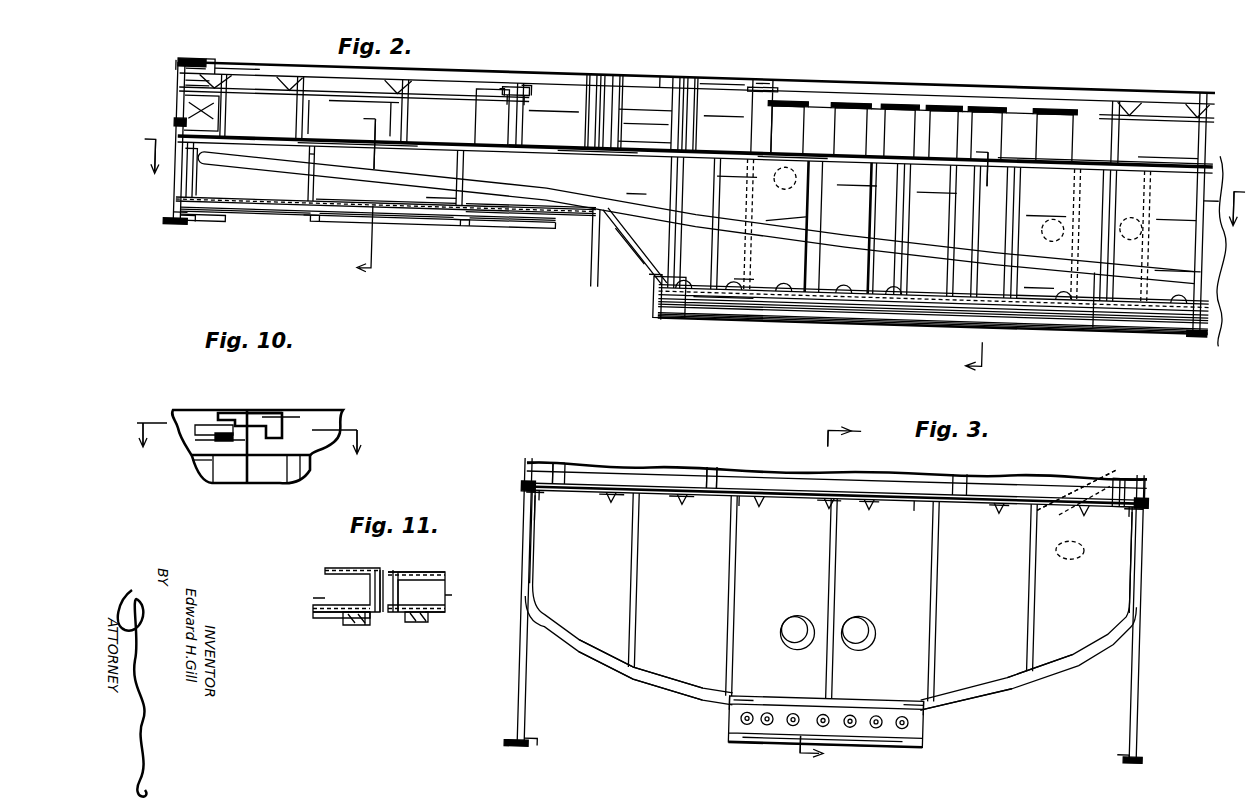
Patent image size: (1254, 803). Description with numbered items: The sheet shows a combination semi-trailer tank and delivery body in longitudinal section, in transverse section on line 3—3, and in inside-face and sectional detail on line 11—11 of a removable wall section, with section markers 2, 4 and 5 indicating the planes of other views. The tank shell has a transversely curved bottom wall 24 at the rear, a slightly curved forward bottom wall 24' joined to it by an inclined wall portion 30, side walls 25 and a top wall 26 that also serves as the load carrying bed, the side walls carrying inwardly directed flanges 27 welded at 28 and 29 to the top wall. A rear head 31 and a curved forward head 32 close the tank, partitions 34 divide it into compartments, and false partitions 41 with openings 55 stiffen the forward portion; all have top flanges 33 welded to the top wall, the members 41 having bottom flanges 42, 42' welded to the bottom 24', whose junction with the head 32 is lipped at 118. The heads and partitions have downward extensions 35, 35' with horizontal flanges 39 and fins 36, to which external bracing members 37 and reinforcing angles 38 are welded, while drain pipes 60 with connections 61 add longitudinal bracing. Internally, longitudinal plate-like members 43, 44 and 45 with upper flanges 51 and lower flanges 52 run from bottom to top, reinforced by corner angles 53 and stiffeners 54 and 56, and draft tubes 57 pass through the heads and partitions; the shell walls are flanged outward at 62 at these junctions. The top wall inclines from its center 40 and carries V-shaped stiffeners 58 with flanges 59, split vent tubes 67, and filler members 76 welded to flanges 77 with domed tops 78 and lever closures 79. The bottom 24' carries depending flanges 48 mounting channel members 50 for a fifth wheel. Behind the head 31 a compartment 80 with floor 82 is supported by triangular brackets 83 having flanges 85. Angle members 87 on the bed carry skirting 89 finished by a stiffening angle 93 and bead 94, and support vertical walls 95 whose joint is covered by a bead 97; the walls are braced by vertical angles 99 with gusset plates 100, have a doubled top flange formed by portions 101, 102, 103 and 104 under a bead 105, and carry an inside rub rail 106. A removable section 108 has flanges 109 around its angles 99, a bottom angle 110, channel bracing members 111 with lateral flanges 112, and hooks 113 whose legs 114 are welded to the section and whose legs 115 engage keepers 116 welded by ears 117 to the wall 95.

In FIG. 3, the section line 2- 2 is at (815, 593).
In FIG. 2, the section line 3— 3 is at (987, 233).
In FIG. 2, the section line 4- 4 is at (693, 181).
In FIG. 2, the section line 5- 5 is at (372, 184).
In FIG. 10, the section line 11— 11 is at (259, 428).
In FIG. 2, the bottom wall 24 is at (933, 302).
In FIG. 3, the bottom wall 24 is at (795, 690).
In FIG. 2, the bottom wall at forward end portion 24' is at (513, 237).
In FIG. 3, the side walls 25 is at (1148, 548).
In FIG. 2, the top wall 26 is at (1123, 141).
In FIG. 3, the top wall 26 is at (670, 482).
In FIG. 3, the inwardly directed flanges 27 is at (833, 526).
In FIG. 3, the weld 28 is at (548, 498).
In FIG. 3, the weld 29 is at (833, 506).
In FIG. 2, the inclined wall portion 30 is at (637, 250).
In FIG. 2, the rear transverse wall, or head 31 is at (1178, 252).
In FIG. 2, the forward curved wall, or head 32 is at (203, 171).
In FIG. 2, the flanges 33 is at (695, 152).
In FIG. 2, the transverse wall portions, or partitions 34 is at (891, 195).
In FIG. 3, the transverse wall portions, or partitions 34 is at (1125, 590).
In FIG. 2, the downwardly extending portions 35 is at (946, 326).
In FIG. 3, the downwardly extending portions 35 is at (822, 752).
In FIG. 2, the downward extension 35' is at (164, 211).
In FIG. 3, the fin portions 36 is at (1060, 685).
In FIG. 2, the external longitudinally extending bracing members 37 is at (660, 305).
In FIG. 3, the external longitudinally extending bracing members 37 is at (829, 688).
In FIG. 2, the reinforcing angles 38 is at (738, 322).
In FIG. 3, the reinforcing angles 38 is at (935, 735).
In FIG. 2, the horizontal flanges 39 is at (933, 336).
In FIG. 3, the horizontal flanges 39 is at (755, 740).
In FIG. 3, the center 40 is at (860, 442).
In FIG. 2, the transversely extending plate-like members 41 is at (696, 216).
In FIG. 2, the bottom flanges 42 is at (456, 191).
In FIG. 2, the lower panel section 42' is at (531, 211).
In FIG. 2, the longitudinally extending plate-like members 43 is at (1110, 320).
In FIG. 3, the longitudinally extending plate-like members 43 is at (930, 562).
In FIG. 2, the plate-like members 44 is at (610, 240).
In FIG. 2, the plate-like members 45 is at (393, 225).
In FIG. 2, the depending flanges 48 is at (290, 215).
In FIG. 2, the transversely extending channel members 50 is at (386, 236).
In FIG. 3, the inwardly directed flanges 51 is at (828, 508).
In FIG. 2, the inwardly directed flanges 52 is at (842, 258).
In FIG. 3, the inwardly directed flanges 52 is at (925, 690).
In FIG. 3, the angles 53 is at (940, 598).
In FIG. 3, the angular stiffening members 54 is at (1030, 598).
In FIG. 2, the openings 55 is at (467, 183).
In FIG. 2, the vertically extending stiffening members 56 is at (957, 205).
In FIG. 2, the draft tubes 57 is at (786, 211).
In FIG. 3, the draft tubes 57 is at (820, 620).
In FIG. 2, the V-shaped stiffening members 58 is at (726, 142).
In FIG. 3, the V-shaped stiffening members 58 is at (841, 527).
In FIG. 3, the flanges 59 is at (868, 491).
In FIG. 2, the drain pipes 60 is at (765, 308).
In FIG. 3, the drain pipes 60 is at (880, 712).
In FIG. 2, the connections 61 is at (906, 282).
In FIG. 2, the outwardly flanged portions 62 is at (947, 300).
In FIG. 2, the split vent tubes 67 is at (892, 229).
In FIG. 3, the split vent tubes 67 is at (841, 570).
In FIG. 2, the filler members 76 is at (1063, 115).
In FIG. 3, the filler members 76 is at (1072, 480).
In FIG. 3, the upwardly directed flange portion 77 is at (1077, 483).
In FIG. 2, the dome-shaped top portions 78 is at (1050, 115).
In FIG. 2, the lever operated closure members 79 is at (990, 110).
In FIG. 2, the compartment 80 is at (1210, 252).
In FIG. 2, the floor 82 is at (1207, 342).
In FIG. 2, the brackets 83 is at (1215, 200).
In FIG. 2, the flange 85 is at (1176, 213).
In FIG. 2, the angle members 87 is at (219, 107).
In FIG. 3, the angle members 87 is at (1146, 482).
In FIG. 2, the skirting 89 is at (178, 188).
In FIG. 3, the skirting 89 is at (1145, 652).
In FIG. 2, the stiffening angle 93 is at (191, 234).
In FIG. 3, the stiffening angle 93 is at (826, 739).
In FIG. 2, the rounded bead member 94 is at (169, 236).
In FIG. 3, the rounded bead member 94 is at (831, 742).
In FIG. 2, the vertical walls 95 is at (180, 86).
In FIG. 3, the vertical walls 95 is at (1148, 478).
In FIG. 11, the vertical walls 95 is at (360, 570).
In FIG. 2, the curved bead member 97 is at (175, 123).
In FIG. 3, the curved bead member 97 is at (526, 483).
In FIG. 2, the vertical angle members 99 is at (180, 105).
In FIG. 3, the vertical angle members 99 is at (720, 470).
In FIG. 10, the vertical angle members 99 is at (198, 460).
In FIG. 11, the vertical angle members 99 is at (400, 582).
In FIG. 2, the gusset plates 100 is at (377, 98).
In FIG. 2, the horizontally extending portion 101 is at (444, 61).
In FIG. 2, the depending portion 102 is at (521, 66).
In FIG. 10, the depending portion 102 is at (195, 440).
In FIG. 11, the depending portion 102 is at (440, 613).
In FIG. 2, the upwardly extending portion 103 is at (185, 72).
In FIG. 11, the upwardly extending portion 103 is at (440, 600).
In FIG. 2, the horizontally extending portion 104 is at (190, 50).
In FIG. 2, the rounded bead 105 is at (175, 62).
In FIG. 2, the rub rail 106 is at (1130, 105).
In FIG. 2, the removable section 108 is at (651, 100).
In FIG. 10, the removable section 108 is at (305, 462).
In FIG. 11, the removable section 108 is at (420, 575).
In FIG. 2, the flanges 109 is at (638, 107).
In FIG. 10, the flanges 109 is at (290, 480).
In FIG. 2, the angle 110 is at (644, 121).
In FIG. 2, the vertically extending bracing members 111 is at (655, 96).
In FIG. 2, the lateral flanges 112 is at (649, 99).
In FIG. 2, the hook-like members 113 is at (658, 99).
In FIG. 10, the hook-like members 113 is at (264, 412).
In FIG. 10, the depending leg portions 114 is at (282, 428).
In FIG. 11, the depending leg portions 114 is at (412, 622).
In FIG. 10, the depending leg portions 115 is at (249, 470).
In FIG. 11, the depending leg portions 115 is at (352, 622).
In FIG. 2, the keepers 116 is at (503, 78).
In FIG. 10, the keepers 116 is at (226, 445).
In FIG. 11, the keepers 116 is at (368, 622).
In FIG. 2, the ears 117 is at (775, 72).
In FIG. 10, the ears 117 is at (208, 424).
In FIG. 11, the ears 117 is at (345, 620).
In FIG. 2, the depending flange, or lip 118 is at (207, 227).